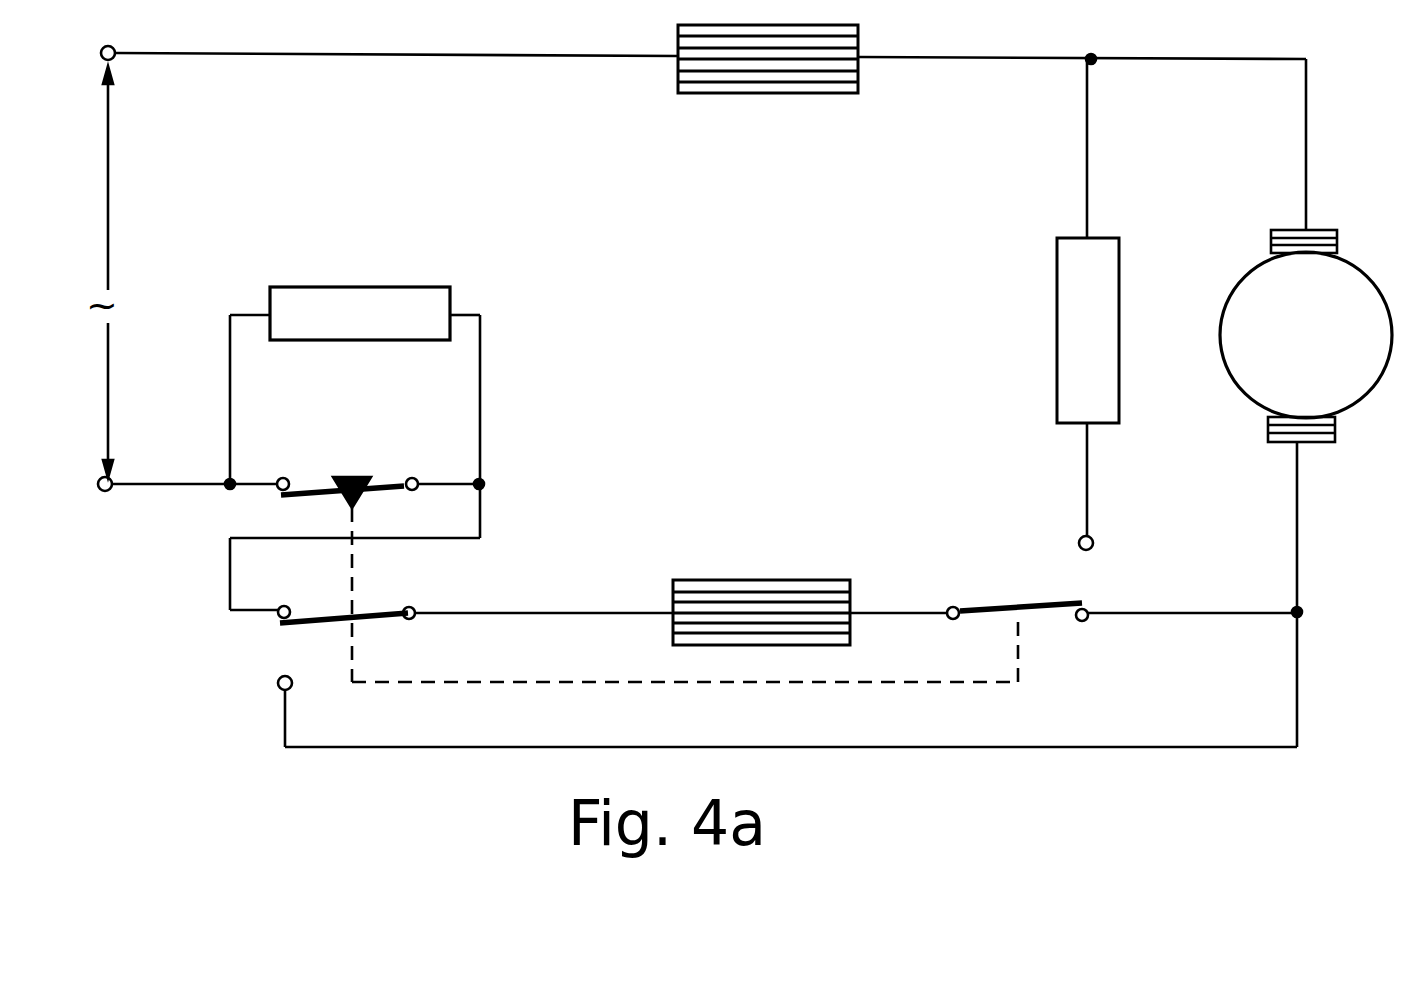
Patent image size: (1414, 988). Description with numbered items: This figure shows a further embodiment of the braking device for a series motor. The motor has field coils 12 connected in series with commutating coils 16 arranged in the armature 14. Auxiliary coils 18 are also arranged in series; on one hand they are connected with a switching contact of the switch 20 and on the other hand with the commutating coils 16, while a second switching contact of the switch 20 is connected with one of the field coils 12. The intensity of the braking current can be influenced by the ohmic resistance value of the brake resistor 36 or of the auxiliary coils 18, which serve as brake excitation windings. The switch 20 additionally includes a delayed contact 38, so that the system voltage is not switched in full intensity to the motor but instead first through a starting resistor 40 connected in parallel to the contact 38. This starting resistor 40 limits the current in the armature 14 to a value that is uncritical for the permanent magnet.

The field coils 12 is at (750, 93).
The armature 14 is at (1247, 402).
The commutating coils 16 is at (1320, 233).
The auxiliary coils 18 is at (1097, 300).
The brake resistor 36 is at (1163, 304).
The switch 20 is at (575, 436).
The delayed contact 38 is at (310, 488).
The starting resistor 40 is at (427, 305).